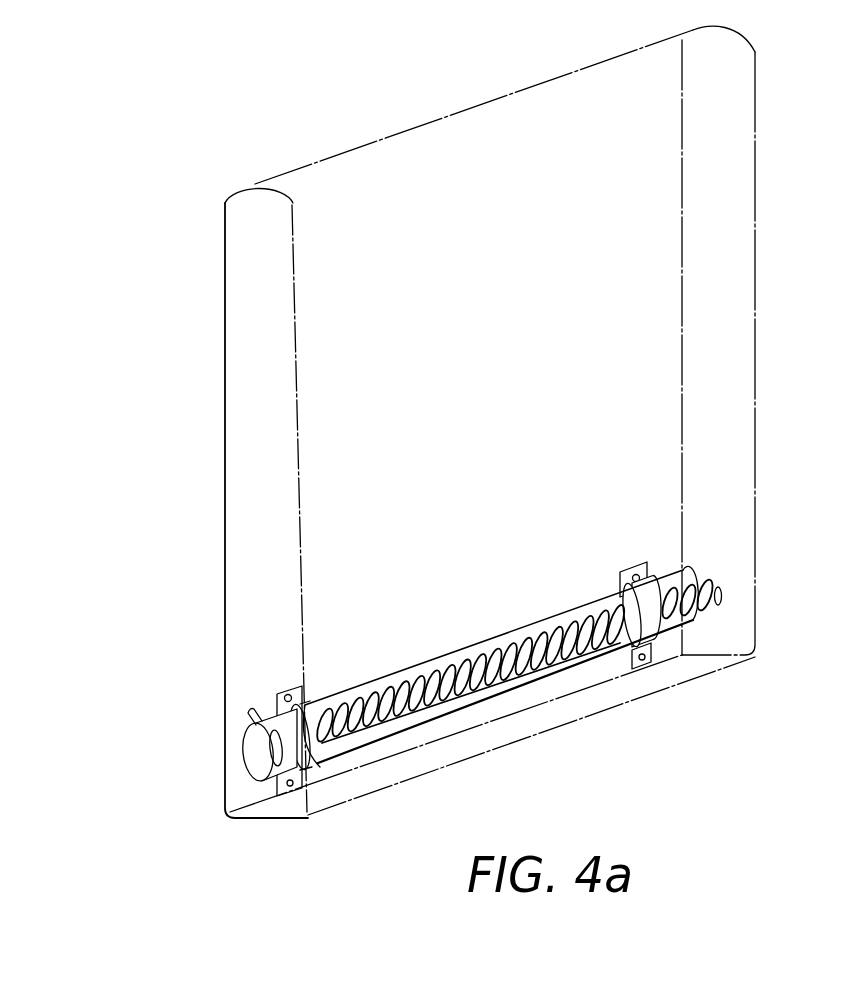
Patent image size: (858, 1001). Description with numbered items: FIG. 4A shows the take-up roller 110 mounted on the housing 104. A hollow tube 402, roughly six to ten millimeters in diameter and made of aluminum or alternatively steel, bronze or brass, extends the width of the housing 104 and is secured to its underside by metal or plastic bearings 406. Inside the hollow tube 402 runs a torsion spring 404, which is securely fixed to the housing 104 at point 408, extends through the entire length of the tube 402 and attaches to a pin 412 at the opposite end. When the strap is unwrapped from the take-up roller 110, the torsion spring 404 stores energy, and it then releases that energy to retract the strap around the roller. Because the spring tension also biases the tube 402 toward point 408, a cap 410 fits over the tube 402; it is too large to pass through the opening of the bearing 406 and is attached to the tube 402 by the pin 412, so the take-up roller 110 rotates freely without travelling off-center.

The housing 104 is at (752, 272).
The take-up roller 110 is at (212, 762).
The hollow tube 402 is at (528, 682).
The torsion spring 404 is at (480, 660).
The bearings 406 is at (288, 692).
The point 408 is at (727, 596).
The cap 410 is at (266, 778).
The pin 412 is at (250, 716).